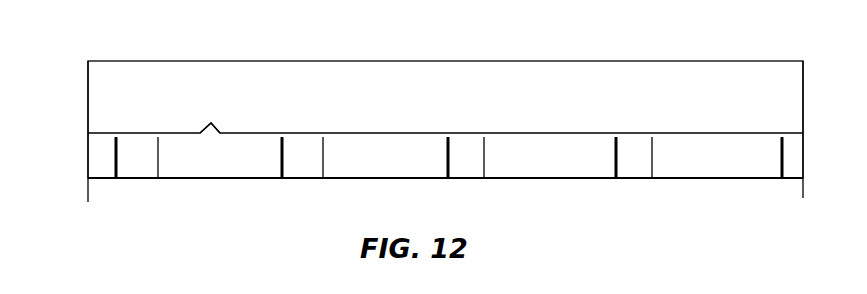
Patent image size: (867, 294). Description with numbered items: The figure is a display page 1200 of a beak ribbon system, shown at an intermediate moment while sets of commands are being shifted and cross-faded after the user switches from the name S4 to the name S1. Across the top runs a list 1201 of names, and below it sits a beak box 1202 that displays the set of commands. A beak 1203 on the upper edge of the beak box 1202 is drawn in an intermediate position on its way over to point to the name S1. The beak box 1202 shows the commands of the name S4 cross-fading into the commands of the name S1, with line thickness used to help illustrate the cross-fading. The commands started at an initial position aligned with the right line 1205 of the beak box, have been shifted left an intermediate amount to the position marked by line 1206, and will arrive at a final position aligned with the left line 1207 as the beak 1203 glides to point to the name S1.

The display page 1200 is at (445, 108).
The list of names 1201 is at (88, 118).
The beak box 1202 is at (92, 161).
The beak 1203 is at (212, 124).
The right line 1205 is at (805, 192).
The line 1206 is at (710, 180).
The left line 1207 is at (92, 198).